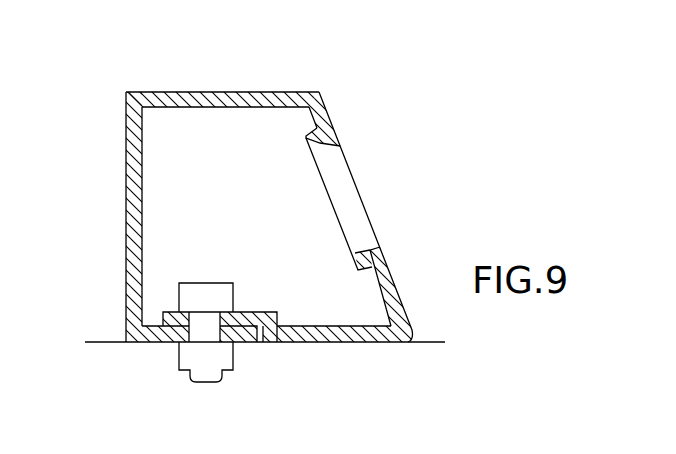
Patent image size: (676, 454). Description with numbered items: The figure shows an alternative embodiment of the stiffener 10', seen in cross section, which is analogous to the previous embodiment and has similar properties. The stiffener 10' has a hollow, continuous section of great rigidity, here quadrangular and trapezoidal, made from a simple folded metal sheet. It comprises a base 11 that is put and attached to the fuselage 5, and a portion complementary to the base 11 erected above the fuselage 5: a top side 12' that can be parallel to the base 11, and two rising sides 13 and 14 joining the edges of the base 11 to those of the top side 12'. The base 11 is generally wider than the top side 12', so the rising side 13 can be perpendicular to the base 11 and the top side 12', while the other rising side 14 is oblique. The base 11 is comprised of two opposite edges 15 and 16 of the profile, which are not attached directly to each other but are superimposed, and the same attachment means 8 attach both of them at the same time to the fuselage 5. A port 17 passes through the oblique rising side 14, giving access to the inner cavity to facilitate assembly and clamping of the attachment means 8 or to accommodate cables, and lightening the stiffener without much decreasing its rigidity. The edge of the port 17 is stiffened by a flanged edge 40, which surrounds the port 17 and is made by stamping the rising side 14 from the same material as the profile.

The fuselage 5 is at (102, 342).
The attachment means 8 is at (238, 291).
The stiffener 10' is at (154, 379).
The base 11 is at (267, 308).
The top side 12' is at (222, 71).
The rising side 13 is at (126, 194).
The rising side 14 is at (325, 112).
The edge 15 is at (245, 343).
The edge 16 is at (367, 343).
The port 17 is at (336, 194).
The flanged edge 40 is at (323, 155).